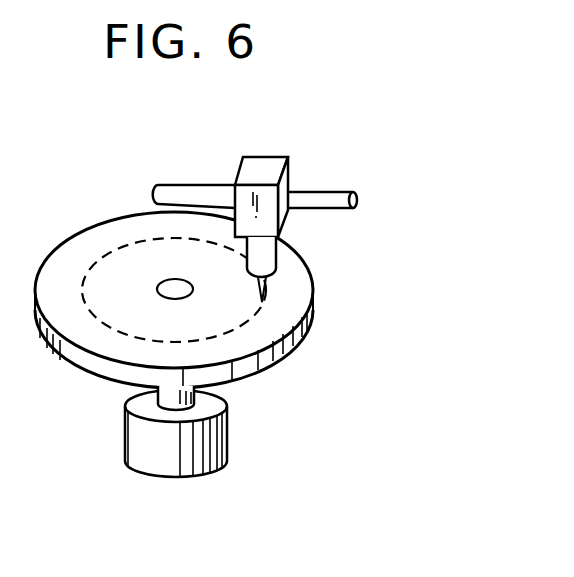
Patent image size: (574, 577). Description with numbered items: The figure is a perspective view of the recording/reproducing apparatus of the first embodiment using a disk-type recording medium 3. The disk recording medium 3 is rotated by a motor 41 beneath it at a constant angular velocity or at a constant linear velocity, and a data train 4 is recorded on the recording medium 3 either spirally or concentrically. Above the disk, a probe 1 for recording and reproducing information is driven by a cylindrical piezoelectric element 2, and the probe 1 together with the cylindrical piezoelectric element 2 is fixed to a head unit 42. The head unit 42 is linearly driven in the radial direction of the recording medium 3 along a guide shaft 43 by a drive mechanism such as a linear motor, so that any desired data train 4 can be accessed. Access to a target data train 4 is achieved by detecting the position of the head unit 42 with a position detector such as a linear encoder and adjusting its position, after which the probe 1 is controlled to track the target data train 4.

The probe 1 is at (268, 284).
The cylindrical piezoelectric element 2 is at (276, 257).
The recording medium 3 is at (290, 355).
The data train 4 is at (258, 306).
The motor 41 is at (224, 447).
The head unit 42 is at (271, 157).
The guide shaft 43 is at (331, 191).